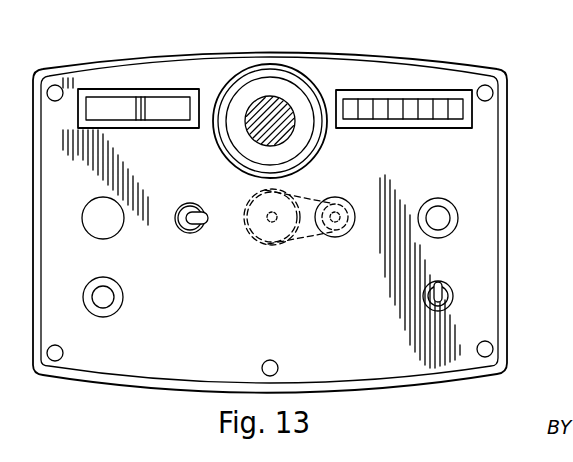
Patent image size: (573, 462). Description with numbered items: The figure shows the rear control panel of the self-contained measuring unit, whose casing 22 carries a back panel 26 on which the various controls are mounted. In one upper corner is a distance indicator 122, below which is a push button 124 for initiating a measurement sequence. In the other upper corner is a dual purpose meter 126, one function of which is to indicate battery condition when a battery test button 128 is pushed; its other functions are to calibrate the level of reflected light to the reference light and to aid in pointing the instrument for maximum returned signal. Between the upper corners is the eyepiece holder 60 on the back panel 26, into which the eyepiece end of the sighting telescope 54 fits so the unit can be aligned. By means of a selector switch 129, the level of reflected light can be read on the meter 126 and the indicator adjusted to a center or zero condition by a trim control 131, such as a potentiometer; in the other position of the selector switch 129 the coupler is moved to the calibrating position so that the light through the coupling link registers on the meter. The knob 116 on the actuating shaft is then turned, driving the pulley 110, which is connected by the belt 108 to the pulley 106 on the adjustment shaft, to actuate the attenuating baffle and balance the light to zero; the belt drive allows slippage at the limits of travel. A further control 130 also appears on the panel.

The casing 22 is at (503, 178).
The back panel 26 is at (388, 364).
The sighting telescope 54 is at (262, 85).
The eyepiece holder 60 is at (300, 73).
The pulley 106 is at (246, 232).
The belt 108 is at (303, 195).
The pulley 110 is at (328, 236).
The knob 116 is at (345, 235).
The distance indicator 122 is at (420, 100).
The push button 124 is at (445, 215).
The dual purpose meter 126 is at (122, 98).
The battery test button 128 is at (108, 298).
The selector switch 129 is at (191, 205).
The toggle switch 130 is at (455, 285).
The trim control 131 is at (118, 230).